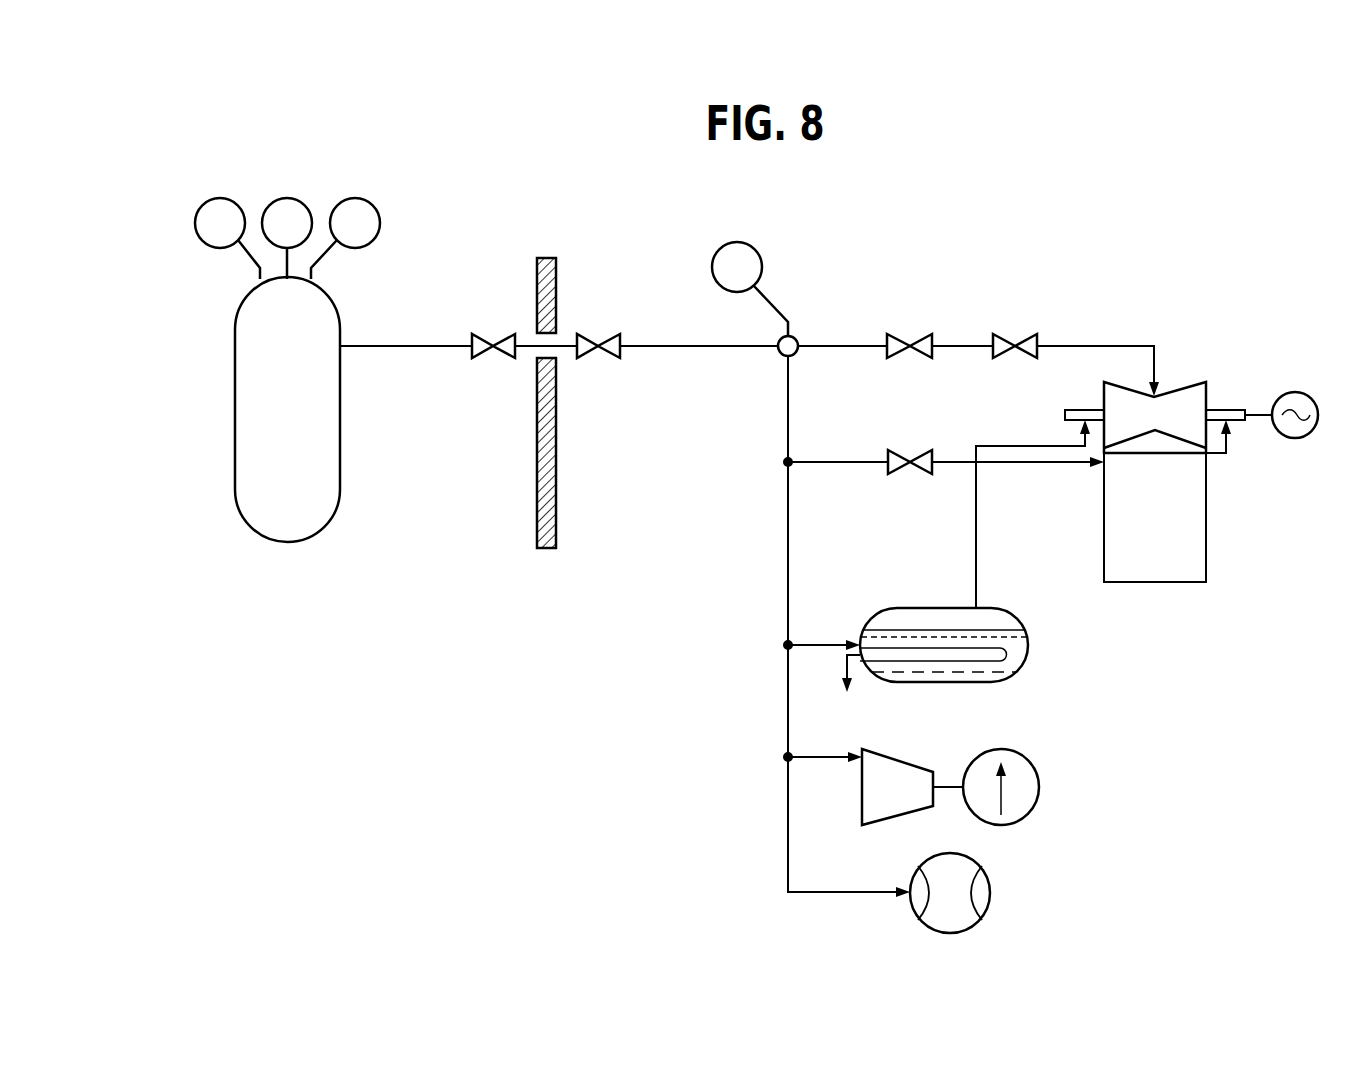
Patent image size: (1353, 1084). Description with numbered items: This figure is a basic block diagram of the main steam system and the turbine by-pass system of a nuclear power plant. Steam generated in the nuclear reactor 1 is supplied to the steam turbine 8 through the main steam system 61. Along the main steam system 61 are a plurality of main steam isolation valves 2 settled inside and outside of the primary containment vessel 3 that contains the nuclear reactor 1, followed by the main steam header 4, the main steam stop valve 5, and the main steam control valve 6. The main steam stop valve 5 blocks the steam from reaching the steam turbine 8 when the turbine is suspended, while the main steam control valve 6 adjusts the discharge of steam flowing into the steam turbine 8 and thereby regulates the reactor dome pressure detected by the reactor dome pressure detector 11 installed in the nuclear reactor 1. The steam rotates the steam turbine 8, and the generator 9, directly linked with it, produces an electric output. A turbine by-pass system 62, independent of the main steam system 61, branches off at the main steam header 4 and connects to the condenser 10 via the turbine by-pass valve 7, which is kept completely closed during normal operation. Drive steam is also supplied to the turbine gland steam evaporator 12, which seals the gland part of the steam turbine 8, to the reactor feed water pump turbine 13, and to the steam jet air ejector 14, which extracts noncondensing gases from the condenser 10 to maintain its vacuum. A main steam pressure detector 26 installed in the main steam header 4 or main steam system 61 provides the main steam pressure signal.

The nuclear reactor 1 is at (336, 306).
The main steam isolation valve 2 is at (486, 333).
The primary containment vessel 3 is at (557, 509).
The main steam header 4 is at (795, 337).
The main steam stop valve 5 is at (901, 333).
The main steam control valve 6 is at (1006, 333).
The turbine by-pass valve 7 is at (901, 450).
The steam turbine 8 is at (1189, 382).
The generator 9 is at (1292, 392).
The condenser 10 is at (1196, 583).
The reactor dome pressure detector 11 is at (211, 196).
The turbine gland steam evaporator 12 is at (1020, 670).
The reactor feed water pump turbine 13 is at (917, 762).
The steam jet air ejector 14 is at (990, 893).
The main steam pressure detector 26 is at (758, 250).
The main steam system 61 is at (700, 348).
The turbine by-pass system 62 is at (858, 465).